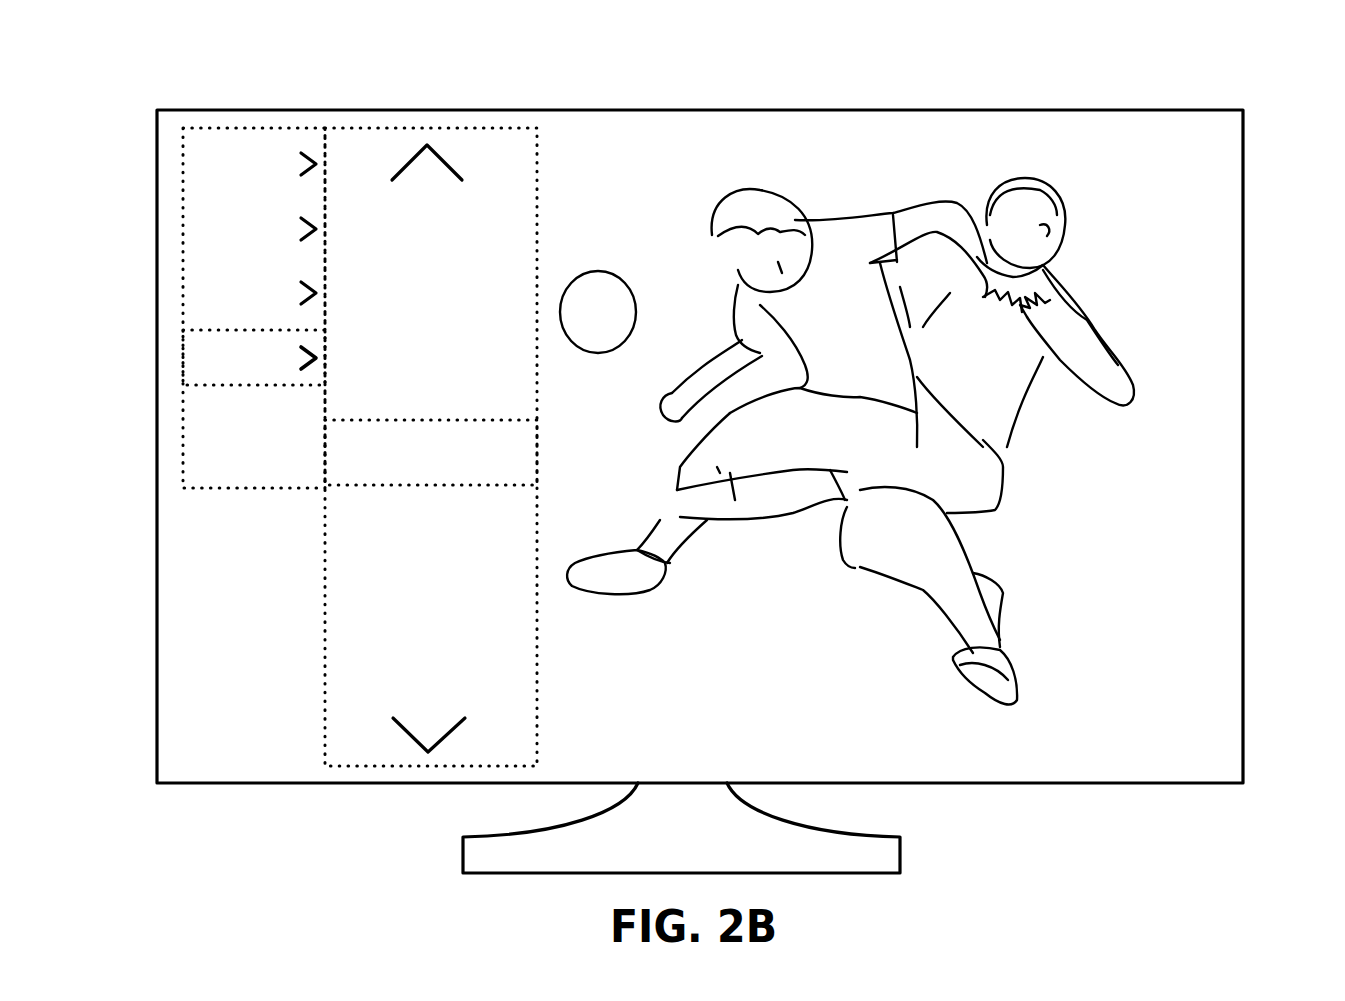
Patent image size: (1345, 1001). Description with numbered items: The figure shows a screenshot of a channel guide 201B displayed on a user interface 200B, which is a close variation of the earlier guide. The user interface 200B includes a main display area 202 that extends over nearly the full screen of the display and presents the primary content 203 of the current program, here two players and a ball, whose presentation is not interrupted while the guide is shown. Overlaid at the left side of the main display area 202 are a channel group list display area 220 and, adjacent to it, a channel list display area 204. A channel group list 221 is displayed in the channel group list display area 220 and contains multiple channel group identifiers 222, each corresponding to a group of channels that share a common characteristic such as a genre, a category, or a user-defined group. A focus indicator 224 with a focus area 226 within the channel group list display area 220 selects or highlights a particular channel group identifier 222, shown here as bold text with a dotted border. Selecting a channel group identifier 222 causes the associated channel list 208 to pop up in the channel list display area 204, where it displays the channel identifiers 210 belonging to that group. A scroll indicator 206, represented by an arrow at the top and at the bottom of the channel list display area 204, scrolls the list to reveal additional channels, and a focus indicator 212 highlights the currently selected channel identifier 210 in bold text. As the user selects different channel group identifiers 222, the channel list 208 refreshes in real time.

The user interface 200B is at (110, 80).
The channel guide 201B is at (553, 128).
The main display area 202 is at (1243, 180).
The primary content 203 is at (1120, 242).
The channel list display area 204 is at (537, 180).
The scroll indicator 206 is at (443, 162).
The channel list 208 is at (379, 155).
The channel identifier 210 is at (515, 217).
The focus indicator 212 is at (562, 453).
The channel group list display area 220 is at (288, 128).
The channel group list 221 is at (243, 132).
The channel group identifier 222 is at (205, 163).
The focus indicator 224 is at (284, 403).
The focus area 226 is at (248, 385).